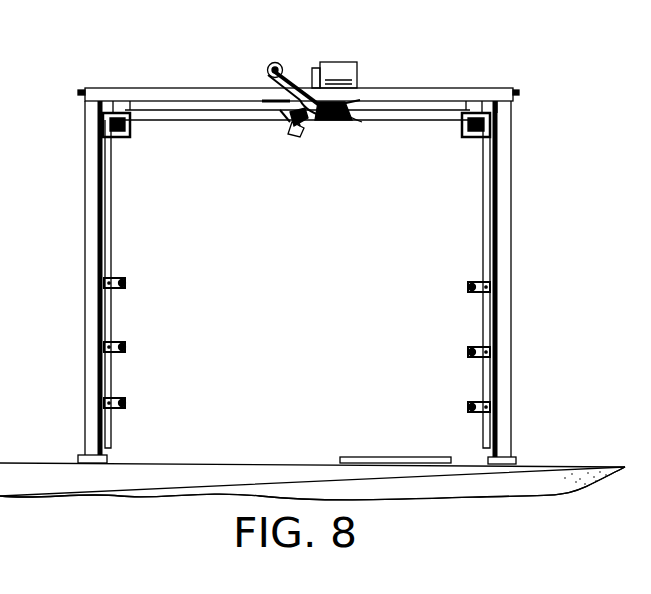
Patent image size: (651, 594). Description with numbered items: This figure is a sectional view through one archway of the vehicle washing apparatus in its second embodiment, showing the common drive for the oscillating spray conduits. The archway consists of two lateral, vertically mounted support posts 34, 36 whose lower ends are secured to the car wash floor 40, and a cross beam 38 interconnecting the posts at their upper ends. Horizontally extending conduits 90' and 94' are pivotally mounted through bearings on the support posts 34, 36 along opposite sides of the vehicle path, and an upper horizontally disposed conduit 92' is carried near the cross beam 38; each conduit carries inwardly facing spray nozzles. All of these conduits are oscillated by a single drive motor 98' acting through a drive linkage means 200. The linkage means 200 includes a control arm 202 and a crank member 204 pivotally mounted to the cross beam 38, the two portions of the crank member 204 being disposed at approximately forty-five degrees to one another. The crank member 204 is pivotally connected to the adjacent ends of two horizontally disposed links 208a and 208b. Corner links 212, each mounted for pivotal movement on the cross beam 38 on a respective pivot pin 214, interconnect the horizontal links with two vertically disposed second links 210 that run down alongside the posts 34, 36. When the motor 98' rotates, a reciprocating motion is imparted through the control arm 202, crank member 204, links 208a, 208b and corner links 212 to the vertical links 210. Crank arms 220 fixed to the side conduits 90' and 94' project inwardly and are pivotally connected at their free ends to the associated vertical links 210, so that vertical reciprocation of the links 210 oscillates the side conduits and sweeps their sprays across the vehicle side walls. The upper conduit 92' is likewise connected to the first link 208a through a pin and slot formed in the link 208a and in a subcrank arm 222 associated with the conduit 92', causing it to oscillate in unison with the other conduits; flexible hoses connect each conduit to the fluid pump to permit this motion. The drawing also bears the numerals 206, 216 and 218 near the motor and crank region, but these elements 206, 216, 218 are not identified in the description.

The support post 34 is at (504, 300).
The support post 36 is at (85, 292).
The cross beam 38 is at (452, 90).
The floor 40 is at (539, 463).
The horizontally extending conduit 90' is at (435, 347).
The upper horizontally disposed conduit 92' is at (302, 141).
The horizontally extending conduit 94' is at (172, 342).
The drive motor 98' is at (295, 47).
The drive linkage means 200 is at (329, 152).
The control arm 202 is at (293, 82).
The crank member 204 is at (333, 115).
The motor housing 206 is at (362, 98).
The first link 208a is at (186, 117).
The horizontally disposed link 208b is at (432, 120).
The vertically disposed second link 210 is at (111, 228).
The corner link 212 is at (118, 126).
The pivot pin 214 is at (113, 120).
The beam pivot fitting 216 is at (273, 100).
The coupling link 218 is at (345, 123).
The crank arm 220 is at (118, 290).
The subcrank arm 222 is at (283, 127).